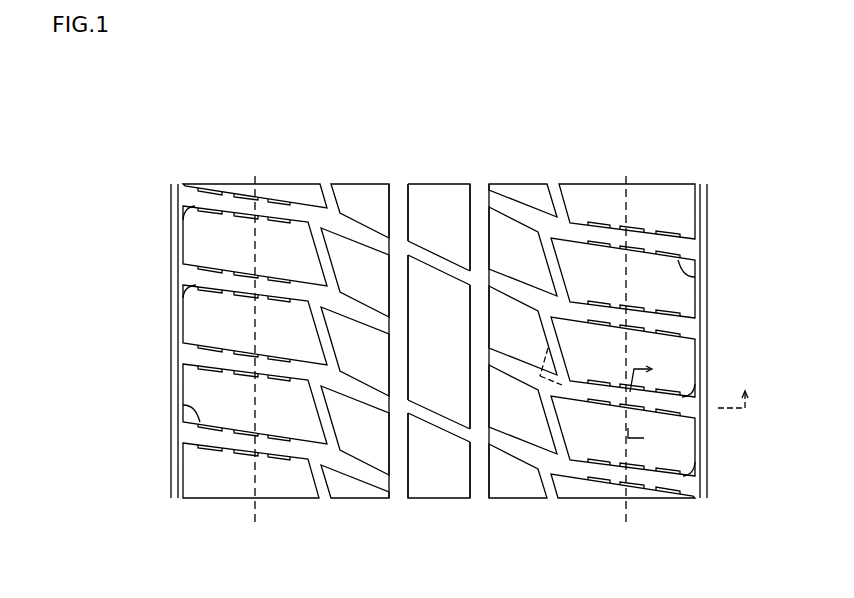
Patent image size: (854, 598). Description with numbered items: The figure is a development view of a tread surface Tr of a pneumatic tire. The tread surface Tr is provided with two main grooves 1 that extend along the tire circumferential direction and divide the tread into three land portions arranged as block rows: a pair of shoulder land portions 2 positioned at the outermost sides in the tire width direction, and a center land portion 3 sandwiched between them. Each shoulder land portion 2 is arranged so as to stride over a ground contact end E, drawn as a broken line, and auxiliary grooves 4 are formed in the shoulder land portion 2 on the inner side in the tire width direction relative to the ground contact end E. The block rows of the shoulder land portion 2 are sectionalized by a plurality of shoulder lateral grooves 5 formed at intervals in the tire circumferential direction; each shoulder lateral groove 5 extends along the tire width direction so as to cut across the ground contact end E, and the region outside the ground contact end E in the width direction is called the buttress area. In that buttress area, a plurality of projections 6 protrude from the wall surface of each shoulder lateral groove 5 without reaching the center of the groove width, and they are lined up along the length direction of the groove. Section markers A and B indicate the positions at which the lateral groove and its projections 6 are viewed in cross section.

The main groove 1 is at (401, 184).
The shoulder land portion 2 is at (269, 493).
The center land portion 3 is at (433, 486).
The auxiliary groove 4 is at (329, 184).
The shoulder lateral groove 5 is at (183, 275).
The projection 6 is at (183, 218).
The tread surface Tr is at (438, 166).
The ground contact end E is at (440, 337).
The section line A- A is at (644, 383).
The section line B- B is at (640, 407).